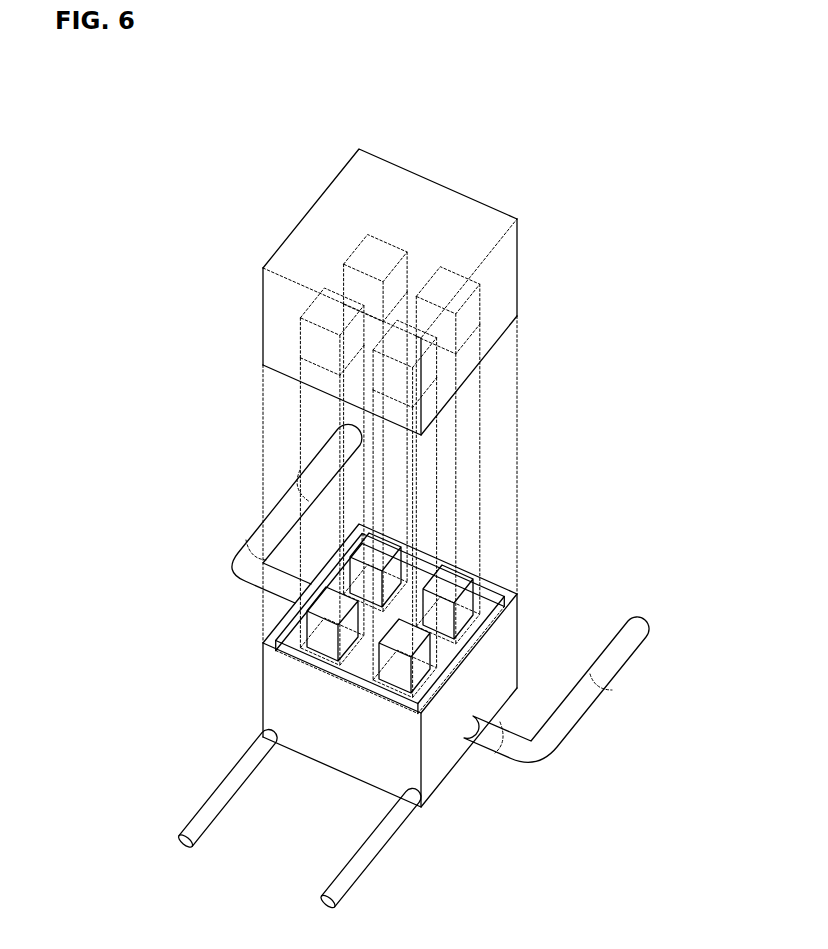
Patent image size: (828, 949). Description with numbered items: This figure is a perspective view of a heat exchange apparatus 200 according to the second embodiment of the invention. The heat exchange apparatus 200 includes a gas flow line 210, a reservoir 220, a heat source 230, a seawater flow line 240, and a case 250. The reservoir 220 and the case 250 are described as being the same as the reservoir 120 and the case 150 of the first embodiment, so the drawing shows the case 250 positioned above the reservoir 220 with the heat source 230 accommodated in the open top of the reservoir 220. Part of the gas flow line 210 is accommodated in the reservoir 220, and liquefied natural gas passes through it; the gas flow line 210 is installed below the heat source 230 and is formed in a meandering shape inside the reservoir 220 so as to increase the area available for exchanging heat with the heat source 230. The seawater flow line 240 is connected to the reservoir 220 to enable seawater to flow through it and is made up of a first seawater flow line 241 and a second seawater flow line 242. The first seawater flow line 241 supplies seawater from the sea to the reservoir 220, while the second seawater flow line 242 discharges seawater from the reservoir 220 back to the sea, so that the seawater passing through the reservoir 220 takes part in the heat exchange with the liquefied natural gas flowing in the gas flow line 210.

The reservoir 120 is at (440, 222).
The case 150 is at (478, 298).
The heat exchange apparatus 200 is at (173, 383).
The gas flow line 210 is at (205, 808).
The reservoir 220 is at (283, 690).
The heat source 230 is at (451, 570).
The seawater flow line 240 is at (436, 654).
The first seawater flow line 241 is at (288, 513).
The second seawater flow line 242 is at (586, 704).
The case 250 is at (482, 600).